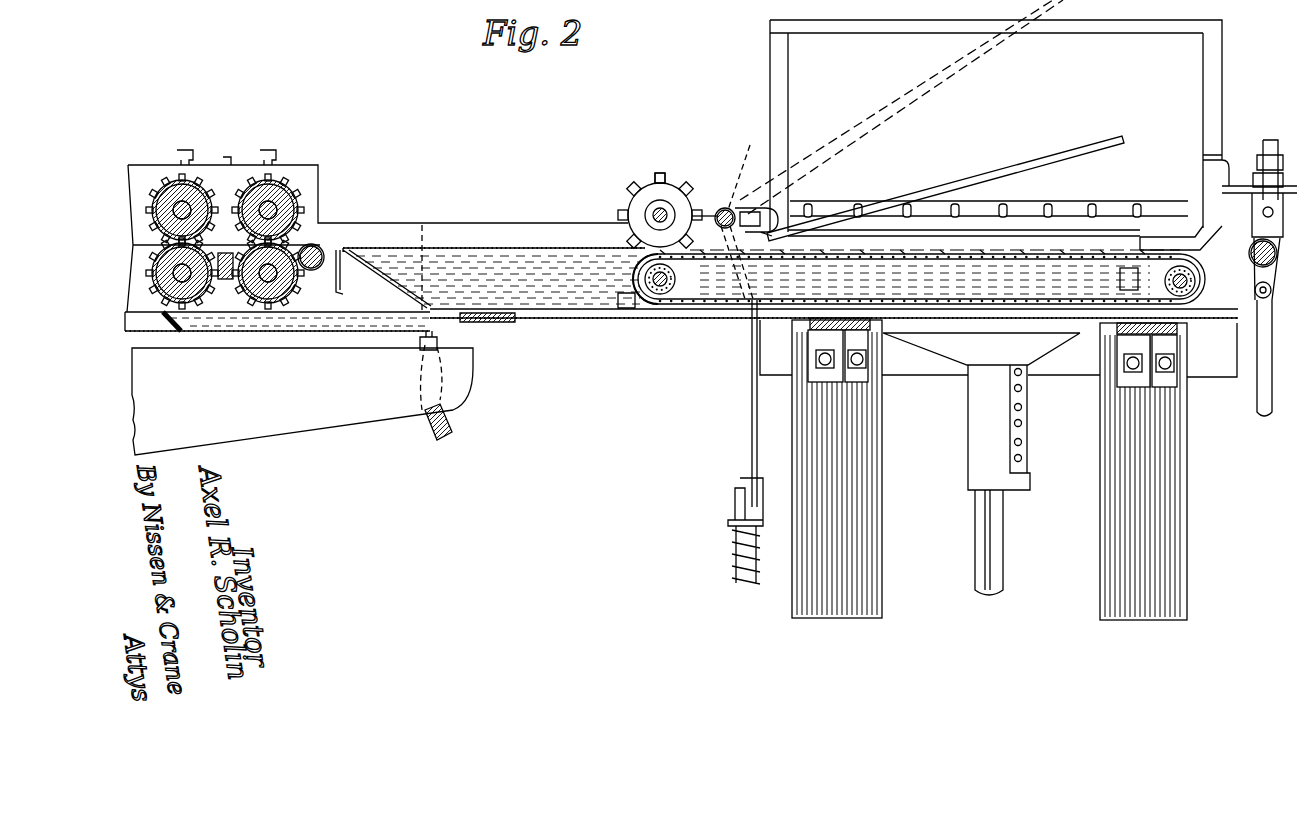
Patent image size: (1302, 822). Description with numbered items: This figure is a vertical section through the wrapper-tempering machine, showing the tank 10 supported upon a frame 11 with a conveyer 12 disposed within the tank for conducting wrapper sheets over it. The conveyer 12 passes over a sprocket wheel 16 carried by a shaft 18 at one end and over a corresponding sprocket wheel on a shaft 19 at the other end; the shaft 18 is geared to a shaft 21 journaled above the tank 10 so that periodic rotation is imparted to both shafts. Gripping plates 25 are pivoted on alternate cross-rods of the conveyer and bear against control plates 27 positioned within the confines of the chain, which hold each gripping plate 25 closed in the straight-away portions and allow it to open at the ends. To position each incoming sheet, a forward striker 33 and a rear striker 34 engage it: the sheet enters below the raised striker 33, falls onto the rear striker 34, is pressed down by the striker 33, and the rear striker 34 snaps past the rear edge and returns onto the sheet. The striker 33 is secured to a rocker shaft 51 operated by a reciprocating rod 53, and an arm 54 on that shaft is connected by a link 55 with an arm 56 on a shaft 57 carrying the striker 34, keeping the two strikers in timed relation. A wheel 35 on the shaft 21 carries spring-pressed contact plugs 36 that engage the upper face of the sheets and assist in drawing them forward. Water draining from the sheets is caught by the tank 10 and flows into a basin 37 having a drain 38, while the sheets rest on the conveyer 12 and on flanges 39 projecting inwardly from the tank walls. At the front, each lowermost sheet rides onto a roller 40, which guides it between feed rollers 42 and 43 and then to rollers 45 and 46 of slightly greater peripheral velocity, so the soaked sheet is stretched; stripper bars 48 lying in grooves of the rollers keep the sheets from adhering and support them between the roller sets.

The tank 10 is at (567, 318).
The frame 11 is at (873, 428).
The conveyer 12 is at (717, 301).
The sprocket wheel 16 is at (676, 302).
The shaft 18 is at (668, 284).
The shaft 19 is at (1160, 252).
The shaft 21 is at (654, 214).
The gripping plate 25 is at (945, 247).
The control plate 27 is at (957, 308).
The forward striker 33 is at (983, 174).
The rear striker 34 is at (1160, 242).
The wheel 35 is at (650, 190).
The spring-pressed contact plug 36 is at (663, 175).
The basin 37 is at (357, 332).
The drain 38 is at (452, 422).
The flange 39 is at (528, 252).
The roller 40 is at (320, 245).
The feed roller 42 is at (297, 197).
The feed roller 43 is at (270, 307).
The roller 45 is at (195, 185).
The roller 46 is at (168, 312).
The stripper bar 48 is at (217, 306).
The rocker shaft 51 is at (722, 208).
The reciprocating rod 53 is at (752, 432).
The arm 54 is at (743, 166).
The link 55 is at (1272, 346).
The arm 56 is at (1272, 286).
The shaft 57 is at (1280, 252).